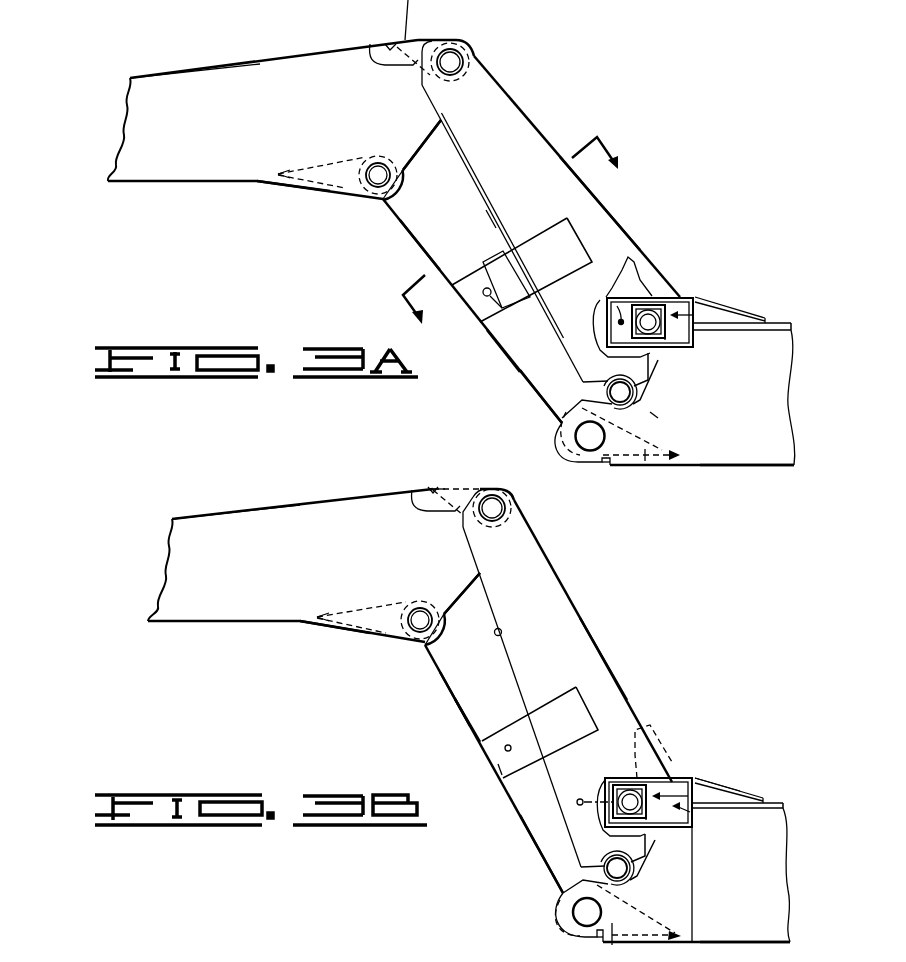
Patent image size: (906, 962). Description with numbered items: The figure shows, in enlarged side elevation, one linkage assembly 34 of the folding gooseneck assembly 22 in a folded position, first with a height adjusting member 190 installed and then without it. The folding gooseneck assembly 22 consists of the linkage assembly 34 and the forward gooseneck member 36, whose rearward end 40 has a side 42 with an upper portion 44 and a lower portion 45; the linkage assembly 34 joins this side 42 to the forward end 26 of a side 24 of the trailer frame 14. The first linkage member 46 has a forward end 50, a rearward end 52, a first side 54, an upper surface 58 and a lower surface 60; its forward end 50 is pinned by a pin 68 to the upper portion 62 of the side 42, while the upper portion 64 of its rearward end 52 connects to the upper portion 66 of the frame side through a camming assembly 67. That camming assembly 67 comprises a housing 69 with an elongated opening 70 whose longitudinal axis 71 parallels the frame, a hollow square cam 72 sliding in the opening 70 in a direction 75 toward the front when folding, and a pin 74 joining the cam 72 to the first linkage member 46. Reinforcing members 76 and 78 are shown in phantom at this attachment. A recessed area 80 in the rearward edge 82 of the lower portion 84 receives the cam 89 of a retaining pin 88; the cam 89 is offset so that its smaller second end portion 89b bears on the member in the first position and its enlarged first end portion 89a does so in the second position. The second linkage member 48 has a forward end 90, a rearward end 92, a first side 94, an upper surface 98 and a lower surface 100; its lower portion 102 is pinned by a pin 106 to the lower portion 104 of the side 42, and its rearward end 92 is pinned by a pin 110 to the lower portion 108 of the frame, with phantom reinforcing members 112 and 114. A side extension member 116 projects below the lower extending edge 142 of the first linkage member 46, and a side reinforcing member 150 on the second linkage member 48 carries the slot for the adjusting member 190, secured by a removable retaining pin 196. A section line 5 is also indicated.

In FIG. 3A, the trailer frame 14 is at (796, 465).
In FIG. 3B, the trailer frame 14 is at (792, 942).
In FIG. 3A, the folding gooseneck assembly 22 is at (348, 244).
In FIG. 3B, the folding gooseneck assembly 22 is at (312, 648).
In FIG. 3A, the opposed side 24 is at (768, 428).
In FIG. 3B, the opposed side 24 is at (750, 888).
In FIG. 3A, the forward end 26 is at (656, 410).
In FIG. 3A, the linkage assembly 34 is at (571, 67).
In FIG. 3B, the linkage assembly 34 is at (606, 582).
In FIG. 3A, the forward gooseneck member 36 is at (125, 100).
In FIG. 3B, the forward gooseneck member 36 is at (170, 545).
In FIG. 3A, the rearward end 40 is at (372, 44).
In FIG. 3B, the rearward end 40 is at (412, 492).
In FIG. 3A, the opposed side 42 is at (200, 131).
In FIG. 3B, the opposed side 42 is at (224, 583).
In FIG. 3A, the upper portion 44 is at (170, 72).
In FIG. 3B, the upper portion 44 is at (214, 514).
In FIG. 3A, the lower portion 45 is at (128, 183).
In FIG. 3B, the lower portion 45 is at (170, 623).
In FIG. 3A, the first linkage member 46 is at (543, 132).
In FIG. 3B, the first linkage member 46 is at (538, 581).
In FIG. 3A, the second linkage member 48 is at (518, 348).
In FIG. 3B, the second linkage member 48 is at (472, 688).
In FIG. 3A, the forward end 50 is at (478, 62).
In FIG. 3B, the forward end 50 is at (518, 510).
In FIG. 3A, the rearward end 52 is at (602, 300).
In FIG. 3B, the rearward end 52 is at (598, 806).
In FIG. 3A, the first side 54 is at (521, 171).
In FIG. 3B, the first side 54 is at (579, 671).
In FIG. 3A, the upper surface 58 is at (617, 223).
In FIG. 3B, the upper surface 58 is at (604, 656).
In FIG. 3A, the lower surface 60 is at (490, 210).
In FIG. 3B, the lower surface 60 is at (502, 634).
In FIG. 3A, the upper portion 62 is at (420, 44).
In FIG. 3B, the upper portion 62 is at (460, 490).
In FIG. 3A, the upper portion 64 is at (662, 298).
In FIG. 3B, the upper portion 64 is at (648, 778).
In FIG. 3A, the upper portion 66 is at (712, 318).
In FIG. 3B, the upper portion 66 is at (712, 792).
In FIG. 3A, the camming assembly 67 is at (700, 326).
In FIG. 3B, the camming assembly 67 is at (705, 806).
In FIG. 3A, the pin 68 is at (455, 56).
In FIG. 3B, the pin 68 is at (496, 503).
In FIG. 3A, the housing 69 is at (792, 333).
In FIG. 3B, the housing 69 is at (692, 822).
In FIG. 3A, the elongated opening 70 is at (684, 340).
In FIG. 3B, the elongated opening 70 is at (668, 810).
In FIG. 3A, the longitudinal axis 71 is at (612, 300).
In FIG. 3B, the longitudinal axis 71 is at (577, 802).
In FIG. 3A, the cam 72 is at (648, 326).
In FIG. 3B, the cam 72 is at (630, 790).
In FIG. 3A, the pin 74 is at (675, 304).
In FIG. 3B, the pin 74 is at (652, 784).
In FIG. 3B, the direction 75 is at (720, 786).
In FIG. 3A, the reinforcing member 76 is at (632, 272).
In FIG. 3B, the reinforcing member 76 is at (638, 732).
In FIG. 3A, the reinforcing member 78 is at (406, 20).
In FIG. 3B, the reinforcing member 78 is at (458, 490).
In FIG. 3A, the recessed area 80 is at (650, 383).
In FIG. 3B, the recessed area 80 is at (649, 839).
In FIG. 3A, the rearward edge 82 is at (656, 368).
In FIG. 3B, the rearward edge 82 is at (645, 860).
In FIG. 3A, the lower portion 84 is at (600, 380).
In FIG. 3B, the lower portion 84 is at (598, 868).
In FIG. 3A, the retaining pin 88 is at (633, 393).
In FIG. 3B, the retaining pin 88 is at (630, 870).
In FIG. 3A, the cam 89 is at (618, 392).
In FIG. 3B, the cam 89 is at (575, 907).
In FIG. 3A, the enlarged first end portion 89a is at (626, 406).
In FIG. 3B, the enlarged first end portion 89a is at (600, 856).
In FIG. 3A, the smaller opposed second end portion 89b is at (608, 385).
In FIG. 3A, the forward end 90 is at (415, 202).
In FIG. 3B, the forward end 90 is at (450, 635).
In FIG. 3A, the rearward end 92 is at (548, 405).
In FIG. 3B, the rearward end 92 is at (556, 878).
In FIG. 3A, the first side 94 is at (460, 223).
In FIG. 3B, the first side 94 is at (484, 668).
In FIG. 3A, the upper surface 98 is at (497, 228).
In FIG. 3A, the lower surface 100 is at (420, 242).
In FIG. 3B, the lower surface 100 is at (472, 728).
In FIG. 3A, the lower portion 102 is at (386, 200).
In FIG. 3B, the lower portion 102 is at (430, 643).
In FIG. 3A, the lower portion 104 is at (318, 190).
In FIG. 3B, the lower portion 104 is at (338, 630).
In FIG. 3A, the pin 106 is at (378, 163).
In FIG. 3B, the pin 106 is at (420, 608).
In FIG. 3A, the lower portion 108 is at (603, 467).
In FIG. 3B, the lower portion 108 is at (600, 942).
In FIG. 3A, the pin 110 is at (586, 436).
In FIG. 3B, the pin 110 is at (595, 908).
In FIG. 3A, the reinforcing member 112 is at (646, 462).
In FIG. 3B, the reinforcing member 112 is at (646, 934).
In FIG. 3A, the reinforcing member 114 is at (330, 165).
In FIG. 3B, the reinforcing member 114 is at (370, 612).
In FIG. 3A, the side extension member 116 is at (560, 266).
In FIG. 3B, the side extension member 116 is at (564, 727).
In FIG. 3B, the lower extending edge 142 is at (504, 750).
In FIG. 3A, the side reinforcing member 150 is at (500, 306).
In FIG. 3B, the side reinforcing member 150 is at (503, 778).
In FIG. 3A, the adjusting member 190 is at (487, 285).
In FIG. 3A, the removable retaining pin 196 is at (470, 300).
In FIG. 3A, the section line 5 is at (525, 237).